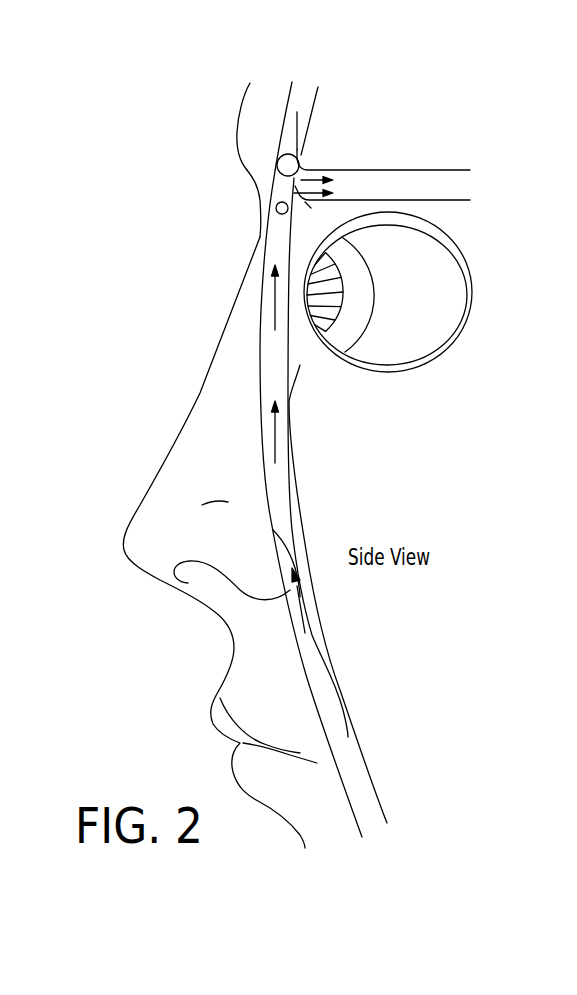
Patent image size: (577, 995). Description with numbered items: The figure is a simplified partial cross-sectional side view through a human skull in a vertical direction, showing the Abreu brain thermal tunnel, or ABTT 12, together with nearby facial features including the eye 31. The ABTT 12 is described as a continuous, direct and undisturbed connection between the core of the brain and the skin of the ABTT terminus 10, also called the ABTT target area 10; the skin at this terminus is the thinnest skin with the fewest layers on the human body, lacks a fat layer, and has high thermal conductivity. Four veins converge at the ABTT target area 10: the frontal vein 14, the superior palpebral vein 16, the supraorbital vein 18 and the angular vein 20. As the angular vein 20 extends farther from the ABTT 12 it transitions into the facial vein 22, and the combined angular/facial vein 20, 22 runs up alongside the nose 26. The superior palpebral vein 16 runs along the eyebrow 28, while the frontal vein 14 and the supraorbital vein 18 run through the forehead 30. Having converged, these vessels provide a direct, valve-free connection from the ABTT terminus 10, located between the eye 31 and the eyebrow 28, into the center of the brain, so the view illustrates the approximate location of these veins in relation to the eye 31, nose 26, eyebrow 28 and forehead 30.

The ABTT terminus 10 is at (268, 168).
The ABTT 12 is at (373, 185).
The frontal vein 14 is at (295, 123).
The superior palpebral vein 16 is at (276, 208).
The supraorbital vein 18 is at (276, 163).
The angular vein 20 is at (273, 350).
The facial vein 22 is at (333, 708).
The nose 26 is at (177, 463).
The eyebrow 28 is at (248, 182).
The forehead 30 is at (255, 105).
The eye 31 is at (347, 338).